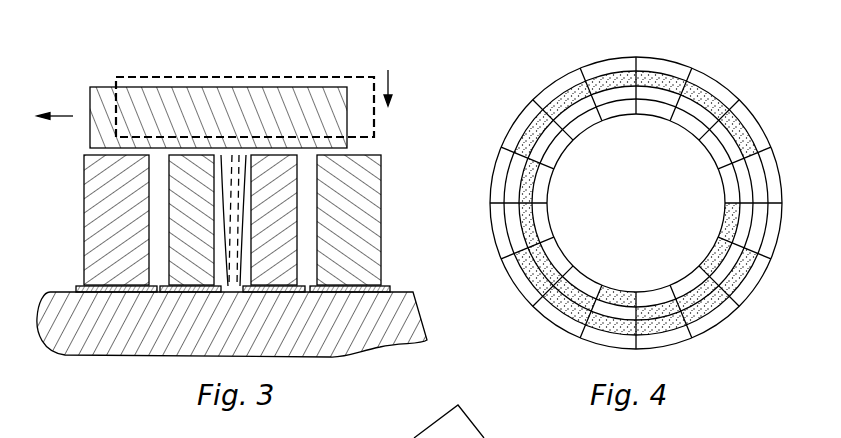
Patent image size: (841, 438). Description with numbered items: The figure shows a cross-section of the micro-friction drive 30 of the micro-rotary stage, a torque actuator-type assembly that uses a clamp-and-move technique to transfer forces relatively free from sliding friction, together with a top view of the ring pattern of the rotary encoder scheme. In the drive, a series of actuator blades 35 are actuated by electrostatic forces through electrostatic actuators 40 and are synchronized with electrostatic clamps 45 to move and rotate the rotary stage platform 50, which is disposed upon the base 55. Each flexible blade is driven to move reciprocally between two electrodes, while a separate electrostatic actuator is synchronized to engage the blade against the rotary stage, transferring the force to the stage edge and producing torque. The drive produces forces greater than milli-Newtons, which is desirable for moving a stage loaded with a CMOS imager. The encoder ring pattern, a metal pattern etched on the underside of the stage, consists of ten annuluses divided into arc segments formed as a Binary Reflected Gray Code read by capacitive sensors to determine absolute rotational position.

The micro-friction drive 30 is at (402, 88).
The actuator blades 35 is at (223, 183).
The electrostatic actuators 40 is at (187, 203).
The electrostatic clamps 45 is at (110, 234).
The rotary stage platform 50 is at (92, 87).
The base 55 is at (407, 318).